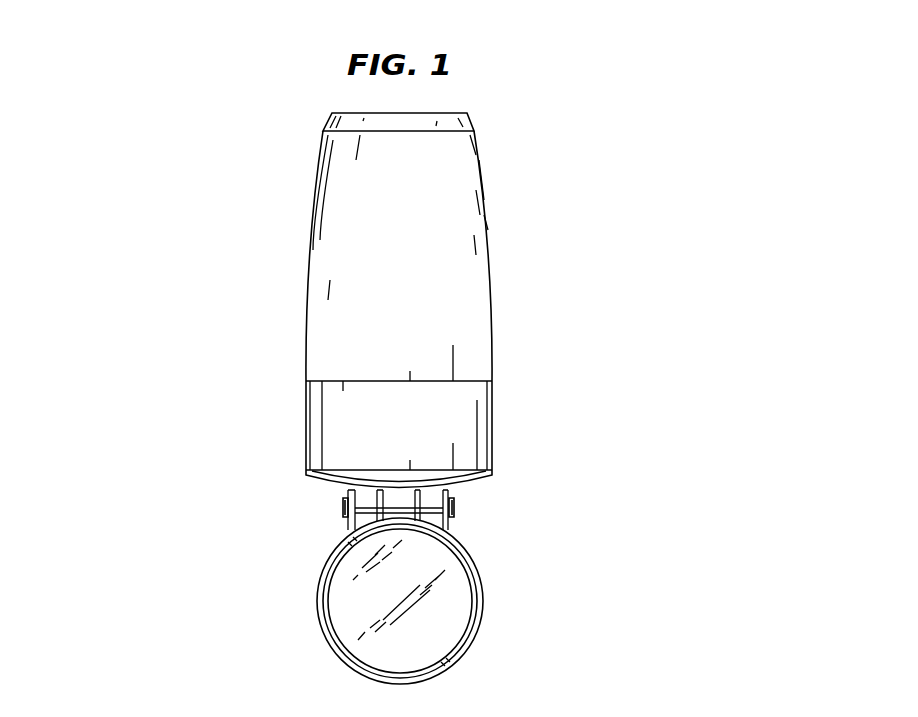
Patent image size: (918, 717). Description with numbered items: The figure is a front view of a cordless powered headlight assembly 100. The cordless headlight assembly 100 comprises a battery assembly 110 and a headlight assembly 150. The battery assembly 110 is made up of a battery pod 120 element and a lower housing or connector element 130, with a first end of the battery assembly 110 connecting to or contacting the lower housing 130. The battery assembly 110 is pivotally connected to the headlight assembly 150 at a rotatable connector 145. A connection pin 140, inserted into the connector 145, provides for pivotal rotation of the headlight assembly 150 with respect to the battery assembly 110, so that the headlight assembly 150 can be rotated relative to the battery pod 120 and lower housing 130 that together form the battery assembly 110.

The cordless powered headlight assembly 100 is at (143, 169).
The battery assembly 110 is at (298, 115).
The battery pod 120 is at (455, 233).
The lower housing 130 is at (495, 420).
The connection pin 140 is at (455, 505).
The connector 145 is at (345, 527).
The headlight assembly 150 is at (347, 609).